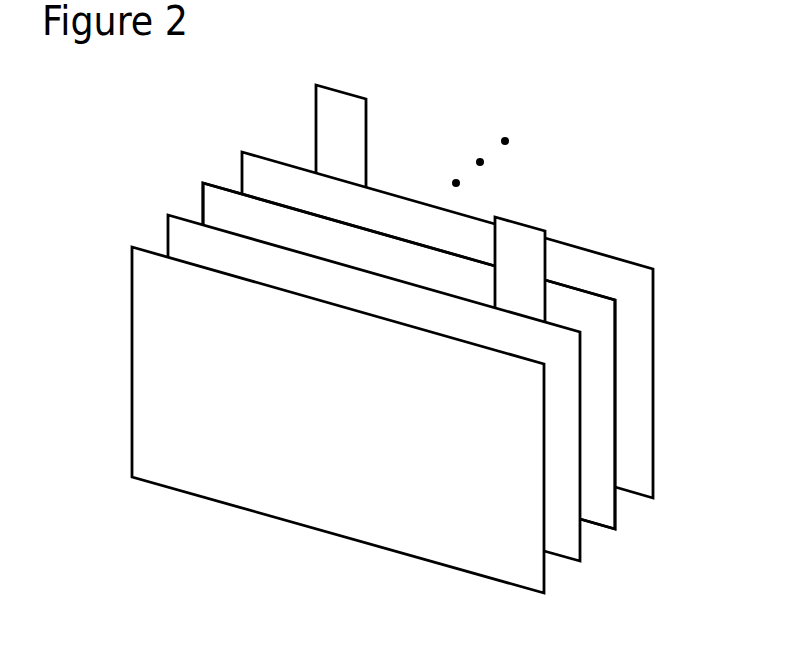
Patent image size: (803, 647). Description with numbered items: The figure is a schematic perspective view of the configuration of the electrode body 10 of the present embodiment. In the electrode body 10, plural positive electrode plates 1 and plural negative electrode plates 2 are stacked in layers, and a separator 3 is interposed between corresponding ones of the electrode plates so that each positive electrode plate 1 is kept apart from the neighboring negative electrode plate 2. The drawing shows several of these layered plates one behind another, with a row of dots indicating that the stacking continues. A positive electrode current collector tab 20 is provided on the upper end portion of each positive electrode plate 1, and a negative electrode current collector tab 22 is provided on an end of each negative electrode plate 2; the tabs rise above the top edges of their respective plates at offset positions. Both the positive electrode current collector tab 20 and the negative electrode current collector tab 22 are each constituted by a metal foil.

The positive electrode plate 1 is at (563, 546).
The negative electrode plate 2 is at (643, 461).
The separator 3 is at (215, 206).
The electrode body 10 is at (389, 310).
The positive electrode current collector tab 20 is at (523, 237).
The negative electrode current collector tab 22 is at (340, 102).